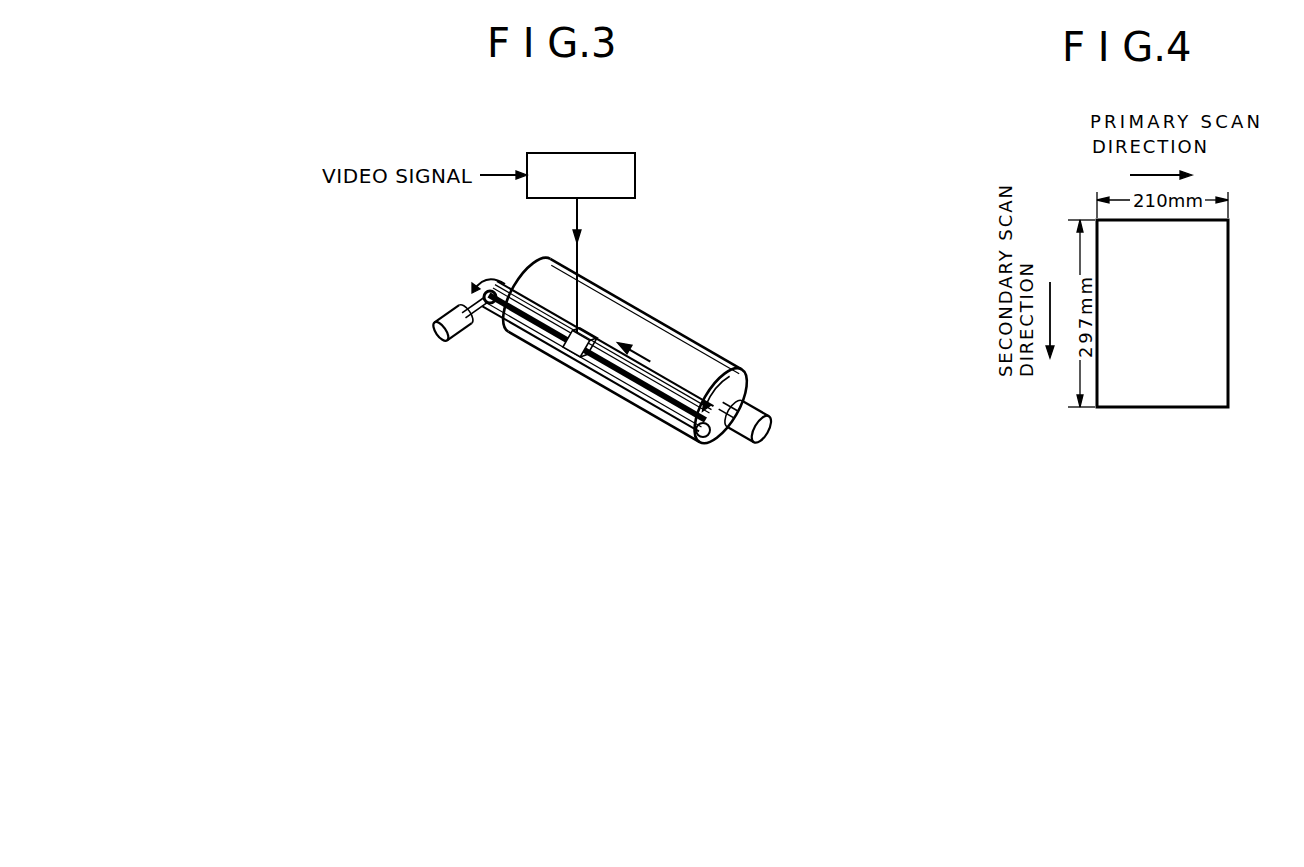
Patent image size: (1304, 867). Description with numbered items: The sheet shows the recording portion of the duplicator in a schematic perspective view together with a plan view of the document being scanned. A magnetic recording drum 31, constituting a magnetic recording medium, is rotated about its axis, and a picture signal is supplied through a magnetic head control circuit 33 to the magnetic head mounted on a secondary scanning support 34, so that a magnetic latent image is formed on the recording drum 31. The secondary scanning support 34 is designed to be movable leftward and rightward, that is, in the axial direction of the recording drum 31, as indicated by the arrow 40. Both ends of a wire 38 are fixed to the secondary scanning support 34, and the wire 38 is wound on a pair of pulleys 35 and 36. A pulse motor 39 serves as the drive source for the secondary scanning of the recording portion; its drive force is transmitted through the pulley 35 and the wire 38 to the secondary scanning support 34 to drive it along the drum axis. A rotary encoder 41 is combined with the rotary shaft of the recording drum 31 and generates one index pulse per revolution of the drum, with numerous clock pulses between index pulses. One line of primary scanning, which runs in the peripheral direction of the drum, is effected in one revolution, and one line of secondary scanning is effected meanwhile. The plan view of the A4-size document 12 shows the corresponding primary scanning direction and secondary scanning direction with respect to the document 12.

In FIG. 4, the document 12 is at (1232, 275).
In FIG. 3, the magnetic recording drum 31 is at (627, 310).
In FIG. 3, the magnetic head control circuit 33 is at (610, 161).
In FIG. 3, the secondary scanning support 34 is at (560, 367).
In FIG. 3, the pulley 35 is at (475, 293).
In FIG. 3, the pulley 36 is at (707, 440).
In FIG. 3, the wire 38 is at (630, 380).
In FIG. 3, the pulse motor 39 is at (467, 340).
In FIG. 3, the arrow 40 is at (640, 353).
In FIG. 3, the rotary encoder 41 is at (760, 413).